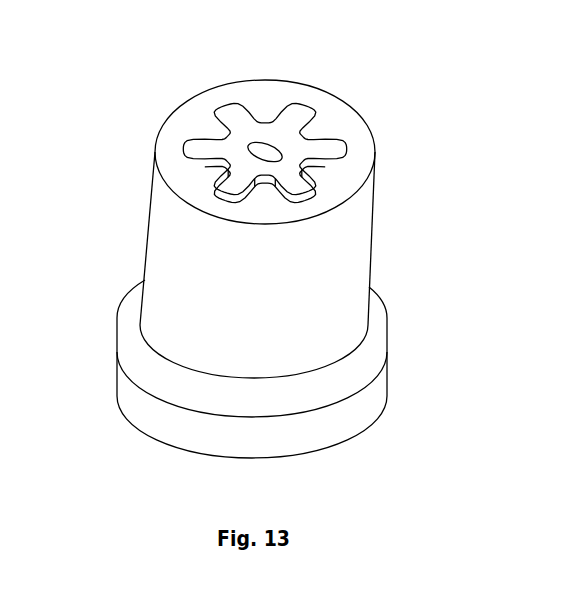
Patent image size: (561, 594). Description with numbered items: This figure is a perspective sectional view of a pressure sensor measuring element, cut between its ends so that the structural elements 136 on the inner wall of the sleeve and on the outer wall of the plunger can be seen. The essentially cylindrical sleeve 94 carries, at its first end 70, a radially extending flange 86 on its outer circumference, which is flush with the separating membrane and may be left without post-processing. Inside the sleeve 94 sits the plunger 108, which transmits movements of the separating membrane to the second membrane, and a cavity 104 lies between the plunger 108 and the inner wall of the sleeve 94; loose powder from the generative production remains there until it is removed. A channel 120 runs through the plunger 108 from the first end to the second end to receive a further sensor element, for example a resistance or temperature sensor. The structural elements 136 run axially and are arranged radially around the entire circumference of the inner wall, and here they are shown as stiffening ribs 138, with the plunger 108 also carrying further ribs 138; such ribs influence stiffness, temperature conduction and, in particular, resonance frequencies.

The first end 70 is at (268, 241).
The flange 86 is at (157, 407).
The sleeve 94 is at (320, 323).
The cavity 104 is at (328, 173).
The plunger 108 is at (238, 157).
The channel 120 is at (273, 152).
The structural elements 136 is at (248, 123).
The ribs 138 is at (315, 120).